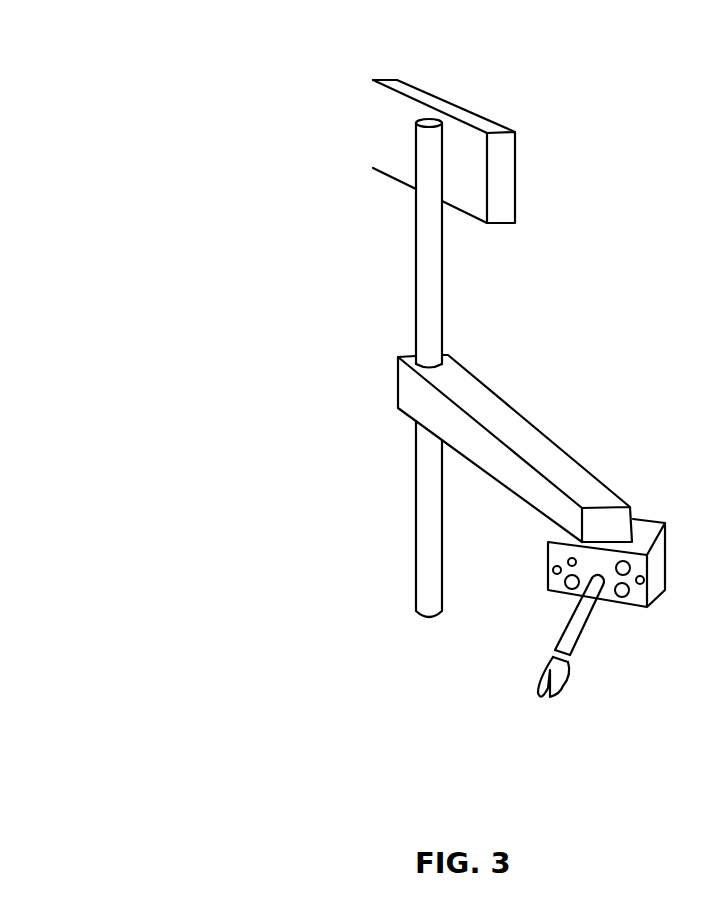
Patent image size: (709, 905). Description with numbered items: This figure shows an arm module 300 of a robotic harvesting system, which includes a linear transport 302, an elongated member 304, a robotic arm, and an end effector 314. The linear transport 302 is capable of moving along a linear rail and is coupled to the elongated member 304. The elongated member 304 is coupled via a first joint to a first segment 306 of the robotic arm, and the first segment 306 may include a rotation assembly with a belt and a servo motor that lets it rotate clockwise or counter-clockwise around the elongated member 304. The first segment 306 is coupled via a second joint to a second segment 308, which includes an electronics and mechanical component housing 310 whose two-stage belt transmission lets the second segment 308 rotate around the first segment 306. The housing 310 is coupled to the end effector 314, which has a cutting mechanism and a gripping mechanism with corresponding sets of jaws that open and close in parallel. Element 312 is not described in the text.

The arm module 300 is at (113, 63).
The linear transport 302 is at (378, 120).
The elongated member 304 is at (425, 247).
The first segment 306 is at (480, 445).
The second segment 308 is at (558, 535).
The electronics and mechanical component housing 310 is at (548, 568).
The tool shaft 312 is at (548, 583).
The end effector 314 is at (542, 707).